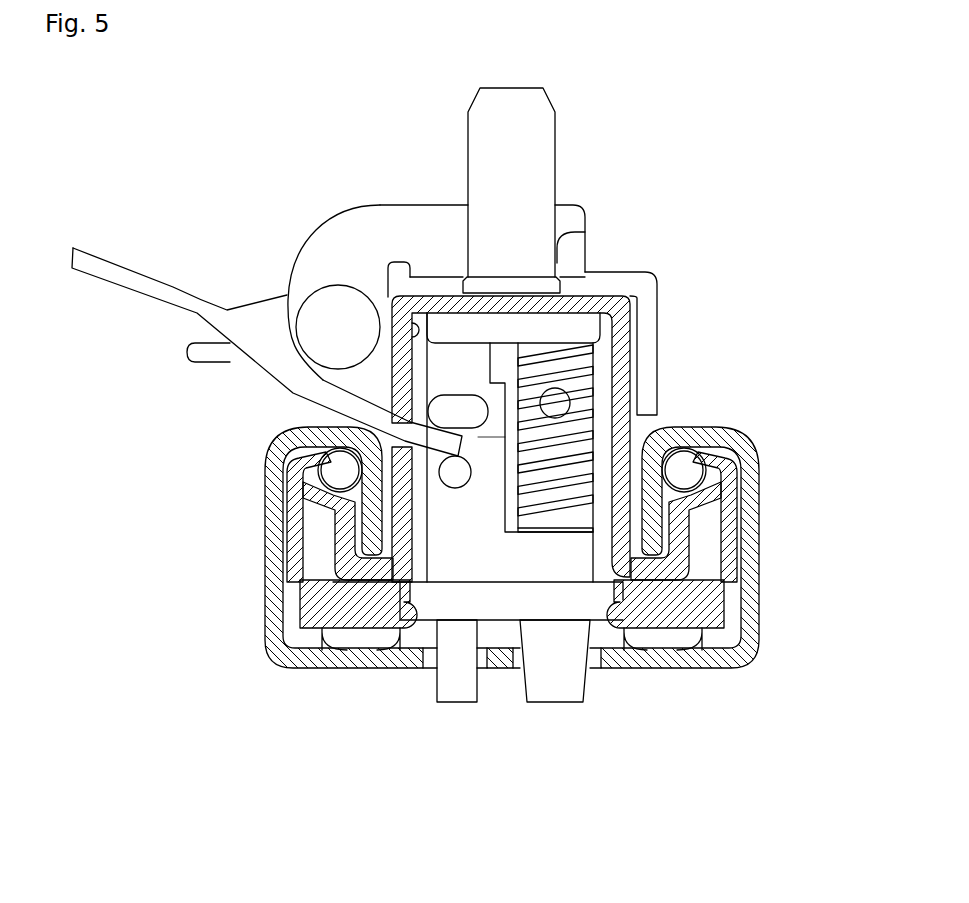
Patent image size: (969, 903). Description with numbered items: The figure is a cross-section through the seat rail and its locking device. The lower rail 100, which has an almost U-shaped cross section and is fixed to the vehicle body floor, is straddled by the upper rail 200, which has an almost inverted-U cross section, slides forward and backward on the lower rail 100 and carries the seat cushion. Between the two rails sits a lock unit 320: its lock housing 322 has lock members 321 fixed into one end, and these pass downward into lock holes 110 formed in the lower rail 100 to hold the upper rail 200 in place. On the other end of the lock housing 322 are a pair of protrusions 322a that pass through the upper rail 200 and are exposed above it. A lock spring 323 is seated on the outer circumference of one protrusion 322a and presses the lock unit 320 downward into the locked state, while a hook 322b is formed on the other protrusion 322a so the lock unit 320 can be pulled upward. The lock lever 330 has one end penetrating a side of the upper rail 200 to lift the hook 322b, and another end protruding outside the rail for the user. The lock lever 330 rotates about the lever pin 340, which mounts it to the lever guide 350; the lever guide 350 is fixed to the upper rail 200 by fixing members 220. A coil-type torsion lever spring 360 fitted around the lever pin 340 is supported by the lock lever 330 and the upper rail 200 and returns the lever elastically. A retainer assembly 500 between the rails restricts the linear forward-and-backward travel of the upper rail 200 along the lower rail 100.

The lower rail 100 is at (758, 553).
The lock holes 110 is at (598, 660).
The upper rail 200 is at (628, 438).
The fixing members 220 is at (540, 150).
The lock unit 320 is at (762, 252).
The lock members 321 is at (450, 635).
The lock housing 322 is at (450, 523).
The protrusions 322a is at (620, 300).
The hook 322b is at (360, 463).
The lock spring 323 is at (595, 385).
The lock lever 330 is at (173, 290).
The lever pin 340 is at (327, 323).
The lever guide 350 is at (438, 286).
The lever spring 360 is at (208, 364).
The retainer assembly 500 is at (708, 613).